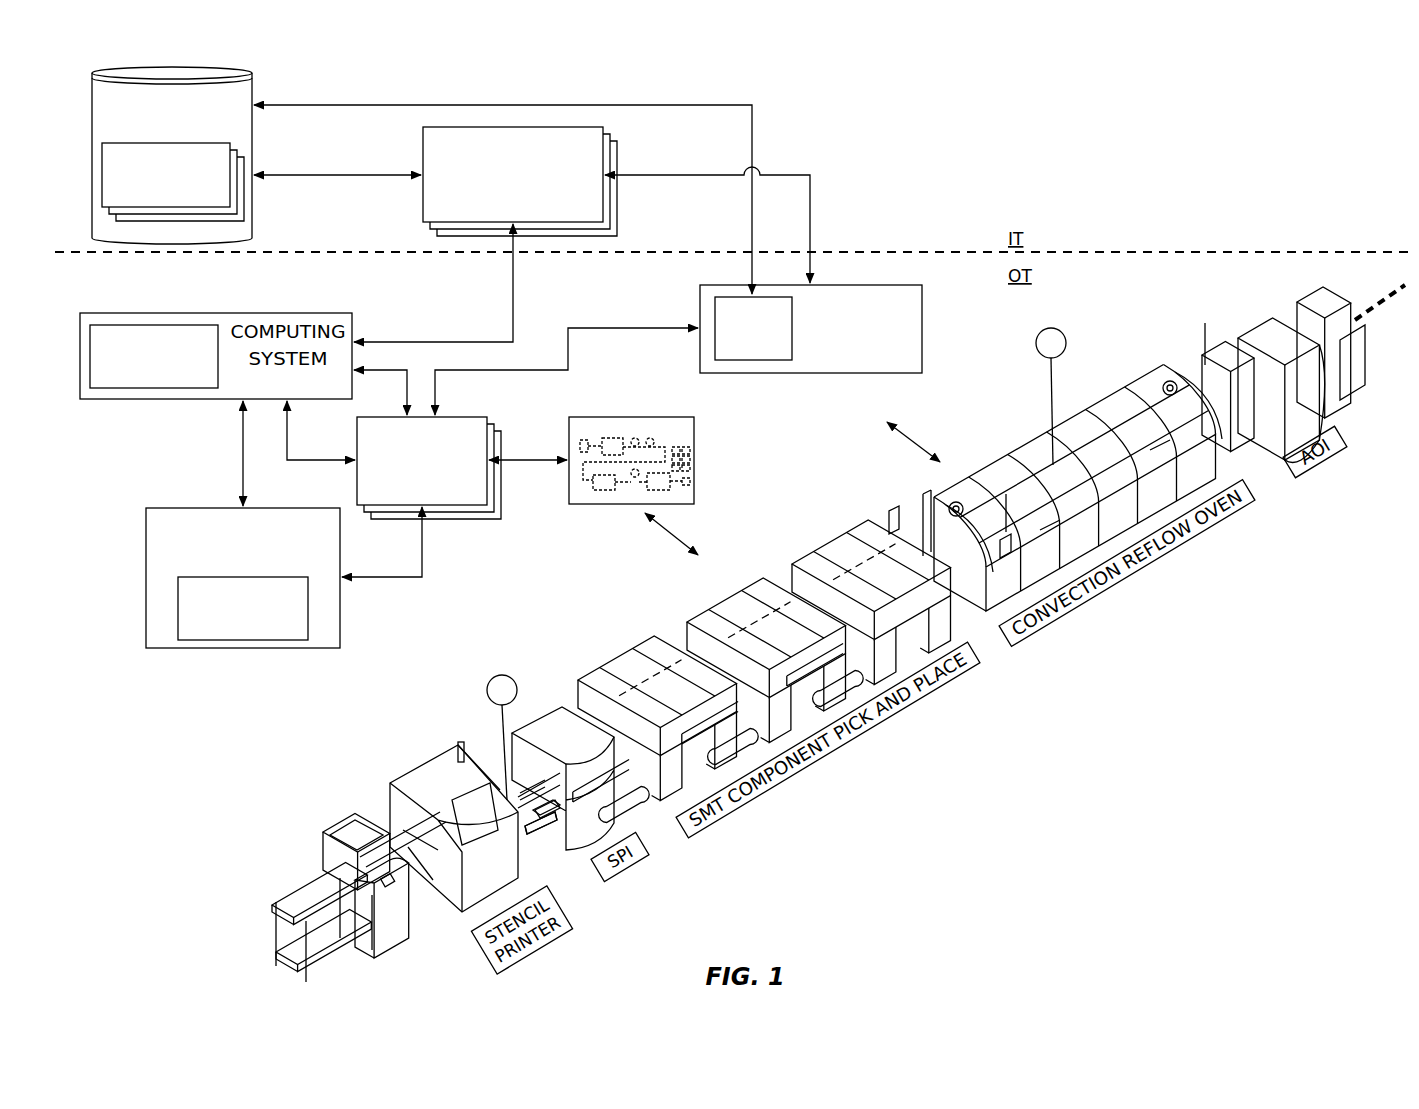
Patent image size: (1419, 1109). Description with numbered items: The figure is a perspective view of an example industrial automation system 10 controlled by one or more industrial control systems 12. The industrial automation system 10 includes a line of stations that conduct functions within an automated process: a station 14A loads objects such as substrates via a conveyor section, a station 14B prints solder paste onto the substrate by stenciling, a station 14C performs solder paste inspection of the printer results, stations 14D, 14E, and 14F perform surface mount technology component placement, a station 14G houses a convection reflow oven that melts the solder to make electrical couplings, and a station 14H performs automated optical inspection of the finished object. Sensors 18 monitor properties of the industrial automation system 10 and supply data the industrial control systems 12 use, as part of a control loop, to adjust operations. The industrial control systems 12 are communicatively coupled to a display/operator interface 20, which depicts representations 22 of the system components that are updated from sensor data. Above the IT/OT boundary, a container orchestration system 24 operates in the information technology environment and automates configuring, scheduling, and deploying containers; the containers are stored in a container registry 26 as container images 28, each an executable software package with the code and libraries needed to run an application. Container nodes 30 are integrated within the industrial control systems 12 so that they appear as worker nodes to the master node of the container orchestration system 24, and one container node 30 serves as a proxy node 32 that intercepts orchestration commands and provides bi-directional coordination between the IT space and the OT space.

The industrial automation system 10 is at (1342, 121).
The industrial control system 12 is at (463, 505).
The station 14A is at (333, 826).
The station 14B is at (423, 767).
The station 14C is at (537, 718).
The station 14D is at (617, 660).
The station 14E is at (728, 600).
The station 14F is at (832, 545).
The station 14G is at (1040, 455).
The station 14H is at (1255, 330).
The sensor 18 is at (494, 677).
The display/operator interface 20 is at (694, 460).
The representations 22 is at (620, 426).
The container orchestration system 24 is at (423, 160).
The container registry 26 is at (252, 160).
The container image 28 is at (165, 207).
The container node 30 is at (155, 388).
The proxy node 32 is at (753, 360).